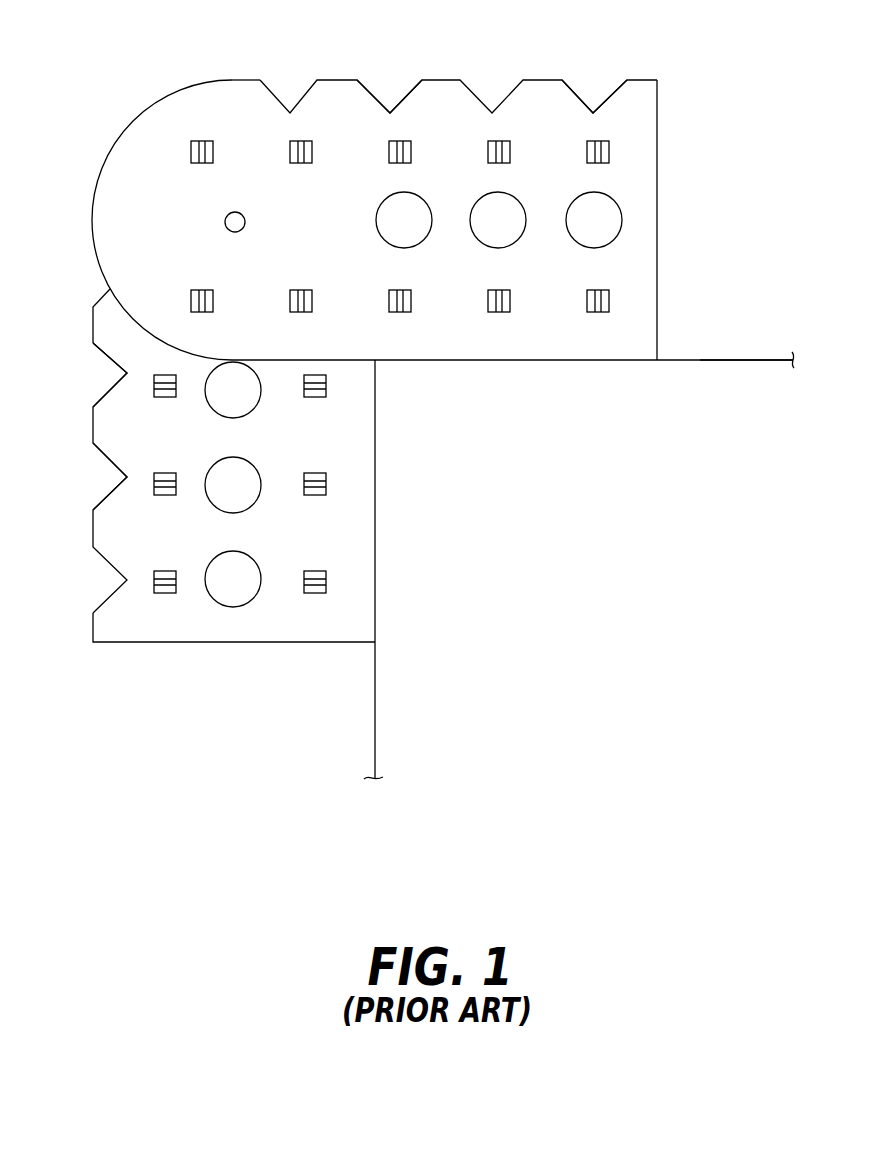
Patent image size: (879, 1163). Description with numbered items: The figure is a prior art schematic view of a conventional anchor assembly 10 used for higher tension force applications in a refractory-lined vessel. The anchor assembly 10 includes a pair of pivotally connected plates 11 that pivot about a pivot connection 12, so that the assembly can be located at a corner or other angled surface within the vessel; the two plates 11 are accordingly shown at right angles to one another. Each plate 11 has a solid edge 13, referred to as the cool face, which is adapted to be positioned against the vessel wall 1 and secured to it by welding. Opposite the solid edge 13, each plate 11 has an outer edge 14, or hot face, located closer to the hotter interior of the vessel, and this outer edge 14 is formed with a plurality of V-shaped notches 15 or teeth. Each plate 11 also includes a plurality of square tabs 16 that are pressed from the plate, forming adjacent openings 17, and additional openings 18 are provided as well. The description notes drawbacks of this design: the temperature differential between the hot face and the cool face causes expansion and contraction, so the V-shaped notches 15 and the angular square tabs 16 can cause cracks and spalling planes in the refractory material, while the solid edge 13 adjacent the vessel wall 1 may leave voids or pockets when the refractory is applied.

The vessel wall 1 is at (713, 360).
The anchor assembly 10 is at (35, 60).
The plate 11 is at (647, 165).
The pivot connection 12 is at (225, 220).
The solid edge 13 is at (503, 360).
The outer edge 14 is at (440, 80).
The V-shaped notches 15 is at (372, 94).
The square tabs 16 is at (212, 142).
The openings 17 is at (192, 148).
The additional openings 18 is at (380, 218).